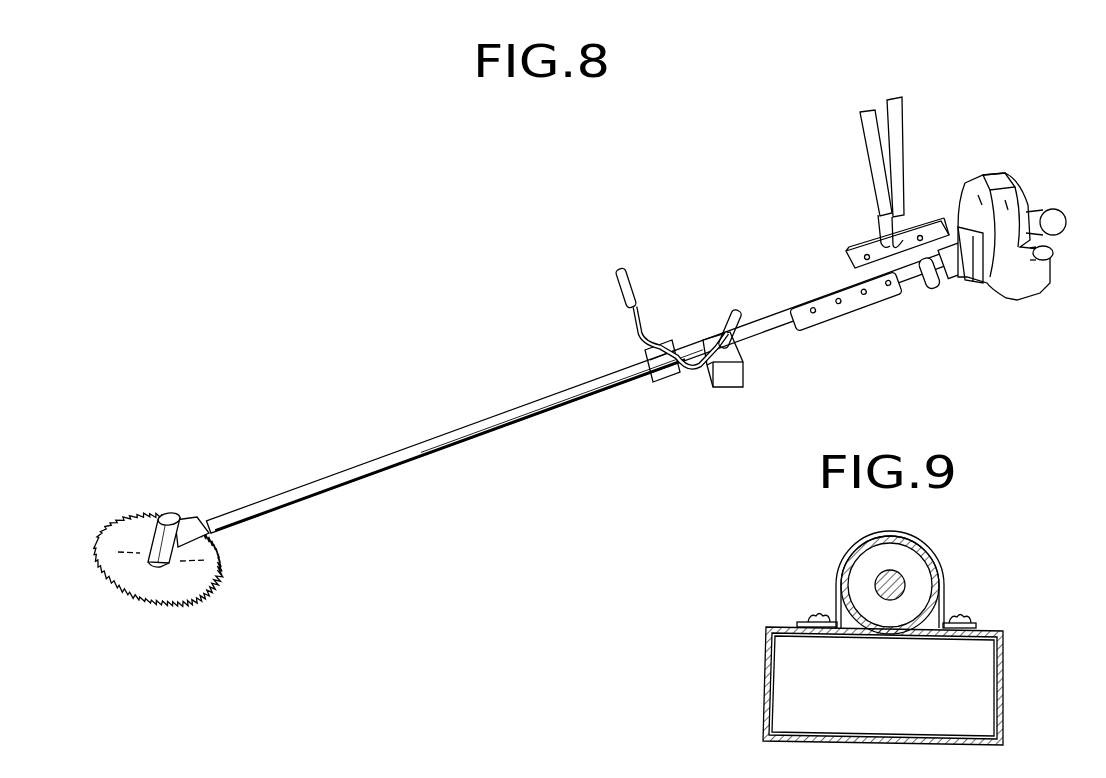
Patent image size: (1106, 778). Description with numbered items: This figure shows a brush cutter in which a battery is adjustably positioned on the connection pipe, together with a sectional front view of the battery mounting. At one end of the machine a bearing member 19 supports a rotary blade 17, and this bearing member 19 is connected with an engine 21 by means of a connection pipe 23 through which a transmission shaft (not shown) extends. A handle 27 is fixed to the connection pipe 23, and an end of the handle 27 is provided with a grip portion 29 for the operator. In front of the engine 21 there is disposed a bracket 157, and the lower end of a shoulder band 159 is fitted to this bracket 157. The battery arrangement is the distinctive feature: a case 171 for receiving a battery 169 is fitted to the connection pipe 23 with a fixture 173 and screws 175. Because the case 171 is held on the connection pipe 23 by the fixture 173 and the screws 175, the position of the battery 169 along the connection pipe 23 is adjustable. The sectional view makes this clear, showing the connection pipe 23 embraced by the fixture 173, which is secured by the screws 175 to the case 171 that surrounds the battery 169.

In FIG. 8, the rotary blade 17 is at (203, 572).
In FIG. 8, the bearing member 19 is at (169, 515).
In FIG. 8, the engine 21 is at (1017, 193).
In FIG. 8, the connection pipe 23 is at (495, 415).
In FIG. 9, the connection pipe 23 is at (920, 543).
In FIG. 8, the handle 27 is at (630, 316).
In FIG. 8, the grip portion 29 is at (630, 293).
In FIG. 8, the bracket 157 is at (880, 243).
In FIG. 8, the shoulder band 159 is at (907, 123).
In FIG. 9, the battery 169 is at (973, 687).
In FIG. 8, the case 171 is at (733, 373).
In FIG. 9, the case 171 is at (1003, 643).
In FIG. 9, the fixture 173 is at (943, 600).
In FIG. 9, the screws 175 is at (813, 616).